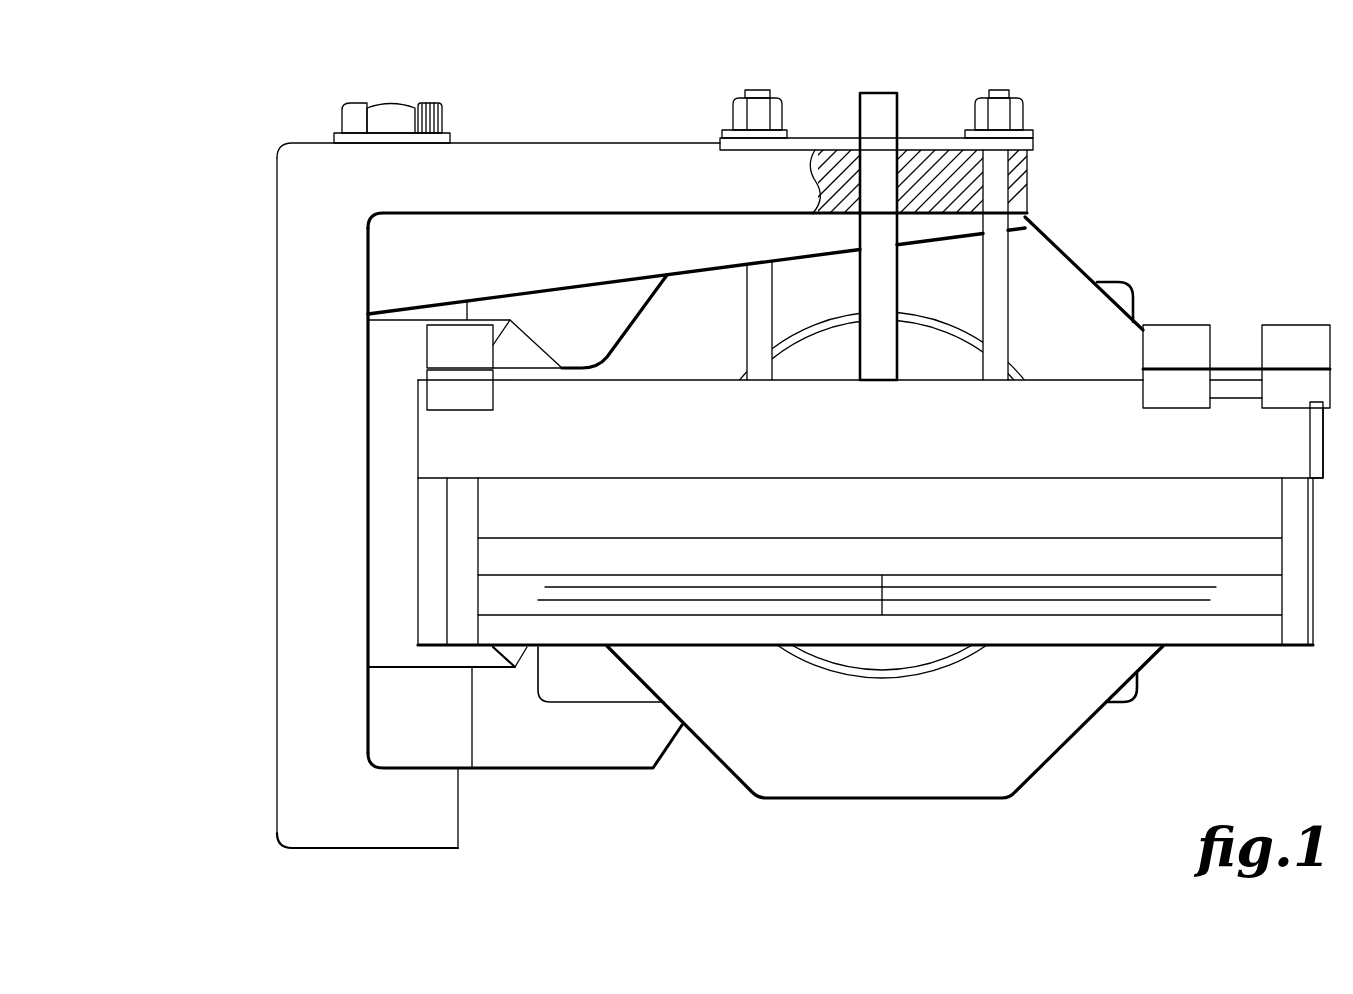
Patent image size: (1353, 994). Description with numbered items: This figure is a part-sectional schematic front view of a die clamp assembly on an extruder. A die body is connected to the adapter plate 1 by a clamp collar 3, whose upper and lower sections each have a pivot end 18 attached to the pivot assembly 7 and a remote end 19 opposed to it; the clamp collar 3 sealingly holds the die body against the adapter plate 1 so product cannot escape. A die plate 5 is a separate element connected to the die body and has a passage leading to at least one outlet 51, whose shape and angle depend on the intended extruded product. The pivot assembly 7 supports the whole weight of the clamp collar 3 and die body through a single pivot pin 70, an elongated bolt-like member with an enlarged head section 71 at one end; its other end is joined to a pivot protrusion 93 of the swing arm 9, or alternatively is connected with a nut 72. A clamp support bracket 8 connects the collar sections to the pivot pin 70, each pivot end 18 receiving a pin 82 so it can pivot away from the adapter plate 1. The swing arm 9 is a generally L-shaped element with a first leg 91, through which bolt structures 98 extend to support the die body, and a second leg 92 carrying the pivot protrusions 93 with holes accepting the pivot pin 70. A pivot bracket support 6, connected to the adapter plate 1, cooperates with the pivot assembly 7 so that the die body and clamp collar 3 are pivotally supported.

The adapter plate 1 is at (606, 702).
The clamp collar assembly 3 is at (885, 475).
The die plate 5 is at (1213, 616).
The pivot bracket support 6 is at (531, 740).
The pivot assembly 7 is at (392, 96).
The clamp support bracket 8 is at (388, 380).
The swing arm 9 is at (558, 135).
The pivot end 18 is at (572, 365).
The remote end 19 is at (1072, 285).
The outlet 51 is at (785, 585).
The pivot pin 70 is at (326, 118).
The enlarged head section 71 is at (448, 116).
The nut 72 is at (335, 851).
The pin 82 is at (418, 481).
The first leg 91 is at (668, 141).
The second leg 92 is at (287, 527).
The pivot protrusion 93 is at (382, 819).
The bolt structures 98 is at (768, 92).